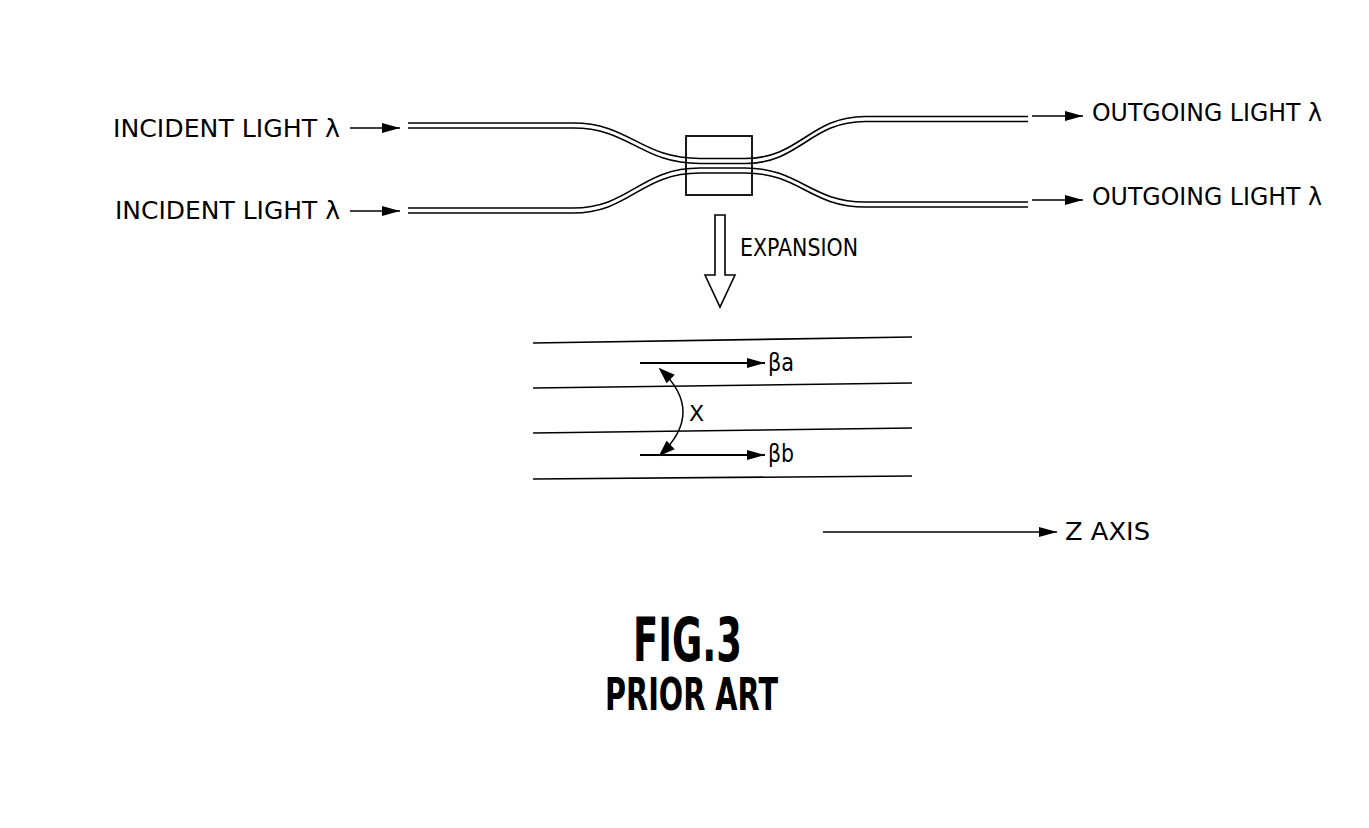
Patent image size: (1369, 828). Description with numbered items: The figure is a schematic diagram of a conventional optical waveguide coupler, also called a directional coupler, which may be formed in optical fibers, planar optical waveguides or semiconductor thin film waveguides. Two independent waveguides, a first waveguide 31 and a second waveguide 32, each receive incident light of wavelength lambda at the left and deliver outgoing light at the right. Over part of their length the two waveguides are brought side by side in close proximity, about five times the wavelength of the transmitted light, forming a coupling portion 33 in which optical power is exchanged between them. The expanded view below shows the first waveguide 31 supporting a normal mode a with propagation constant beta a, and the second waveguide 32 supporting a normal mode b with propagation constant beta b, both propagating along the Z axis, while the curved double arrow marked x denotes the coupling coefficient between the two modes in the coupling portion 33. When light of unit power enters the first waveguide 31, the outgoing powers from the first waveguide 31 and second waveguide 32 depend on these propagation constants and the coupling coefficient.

The first waveguide 31 is at (425, 122).
The second waveguide 32 is at (428, 215).
The coupling portion 33 is at (712, 136).